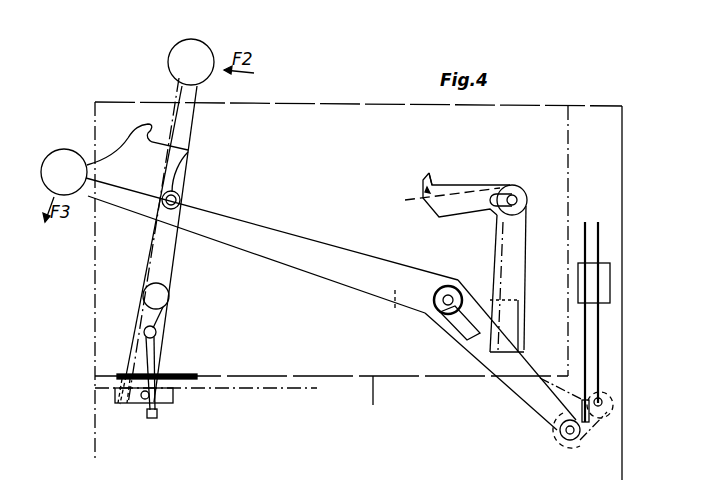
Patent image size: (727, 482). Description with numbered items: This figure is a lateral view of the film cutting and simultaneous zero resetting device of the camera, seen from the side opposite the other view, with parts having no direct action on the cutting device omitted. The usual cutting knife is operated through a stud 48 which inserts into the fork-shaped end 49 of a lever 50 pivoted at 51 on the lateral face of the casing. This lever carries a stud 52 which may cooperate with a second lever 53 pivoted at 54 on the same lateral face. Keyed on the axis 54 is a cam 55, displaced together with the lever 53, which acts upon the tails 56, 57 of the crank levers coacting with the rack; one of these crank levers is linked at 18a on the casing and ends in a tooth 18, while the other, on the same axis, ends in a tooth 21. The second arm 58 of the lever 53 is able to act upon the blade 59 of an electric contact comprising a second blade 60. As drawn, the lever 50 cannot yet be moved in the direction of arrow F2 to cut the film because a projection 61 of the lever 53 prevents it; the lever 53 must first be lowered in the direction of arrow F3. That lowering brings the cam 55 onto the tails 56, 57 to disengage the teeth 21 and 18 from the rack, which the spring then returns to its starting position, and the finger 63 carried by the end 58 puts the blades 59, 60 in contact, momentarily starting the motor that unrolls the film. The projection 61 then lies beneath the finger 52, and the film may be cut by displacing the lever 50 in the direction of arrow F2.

The tooth 18 is at (422, 189).
The crank lever pivot 18a is at (516, 191).
The tooth 21 is at (429, 176).
The stud 48 is at (136, 400).
The fork-shaped end 49 is at (159, 416).
The lever 50 is at (168, 260).
The pivot 51 is at (143, 296).
The stud 52 is at (181, 199).
The second lever 53 is at (294, 250).
The pivot axis 54 is at (446, 314).
The cam 55 is at (472, 339).
The tail of crank lever 56 is at (518, 290).
The tail of crank lever 57 is at (521, 332).
The second arm 58 is at (523, 389).
The blade 59 is at (586, 418).
The second blade 60 is at (597, 362).
The projection 61 is at (184, 162).
The finger 63 is at (566, 441).